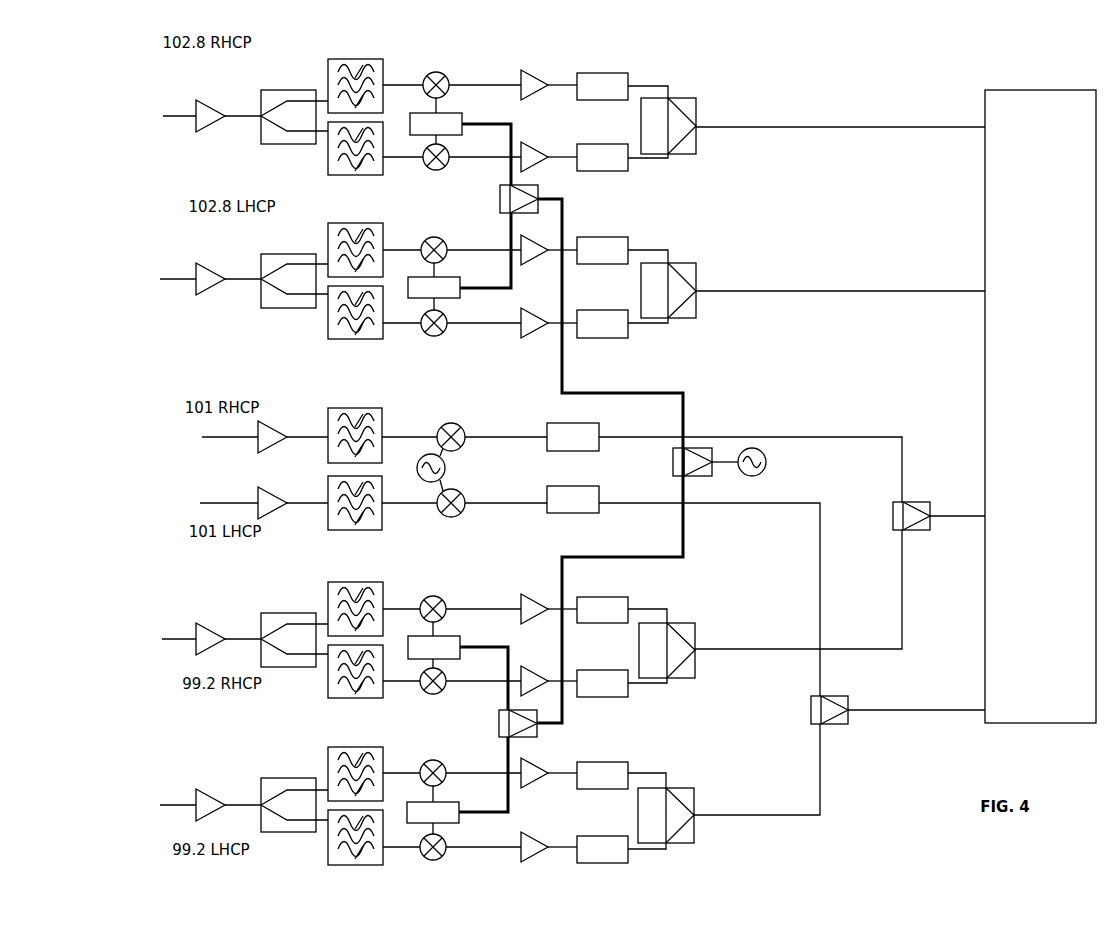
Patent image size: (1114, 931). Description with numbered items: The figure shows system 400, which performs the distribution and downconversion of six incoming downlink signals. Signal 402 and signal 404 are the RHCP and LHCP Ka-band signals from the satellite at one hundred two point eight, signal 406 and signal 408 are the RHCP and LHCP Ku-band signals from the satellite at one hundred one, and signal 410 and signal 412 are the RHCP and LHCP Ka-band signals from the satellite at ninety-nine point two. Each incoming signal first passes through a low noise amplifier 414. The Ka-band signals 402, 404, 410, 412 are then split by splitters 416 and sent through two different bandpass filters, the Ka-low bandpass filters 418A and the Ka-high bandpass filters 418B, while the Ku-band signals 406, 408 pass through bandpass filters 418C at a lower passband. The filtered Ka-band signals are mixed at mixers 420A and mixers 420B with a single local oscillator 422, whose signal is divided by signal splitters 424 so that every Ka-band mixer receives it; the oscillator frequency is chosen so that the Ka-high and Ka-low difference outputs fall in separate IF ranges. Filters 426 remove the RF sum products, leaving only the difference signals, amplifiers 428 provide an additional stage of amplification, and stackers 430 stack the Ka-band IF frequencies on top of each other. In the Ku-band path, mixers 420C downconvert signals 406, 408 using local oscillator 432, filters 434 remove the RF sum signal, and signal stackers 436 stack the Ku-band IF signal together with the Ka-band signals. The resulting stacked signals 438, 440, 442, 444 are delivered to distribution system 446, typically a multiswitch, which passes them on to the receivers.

The system 400 is at (800, 110).
The RHCP signal 402 is at (165, 116).
The LHCP signal 404 is at (164, 293).
The RHCP signal 406 is at (213, 448).
The LHCP signal 408 is at (206, 503).
The RHCP signal 410 is at (162, 629).
The LHCP signal 412 is at (160, 794).
The low noise amplifier 414 is at (207, 100).
The splitter 416 is at (275, 90).
The bandpass filter 418A is at (360, 62).
The bandpass filter 418B is at (355, 174).
The bandpass filter 418C is at (358, 410).
The mixer 420A is at (447, 75).
The mixer 420B is at (428, 168).
The mixer 420C is at (456, 424).
The local oscillator 422 is at (762, 471).
The signal splitter 424 is at (462, 113).
The filter 426 is at (606, 73).
The amplifier 428 is at (541, 78).
The stacker 430 is at (698, 96).
The local oscillator 432 is at (446, 465).
The filter 434 is at (570, 423).
The signal stacker 436 is at (892, 532).
The stacked signal 438 is at (895, 129).
The stacked signal 440 is at (873, 290).
The stacked signal 442 is at (957, 514).
The stacked signal 444 is at (902, 709).
The distribution system 446 is at (1040, 90).